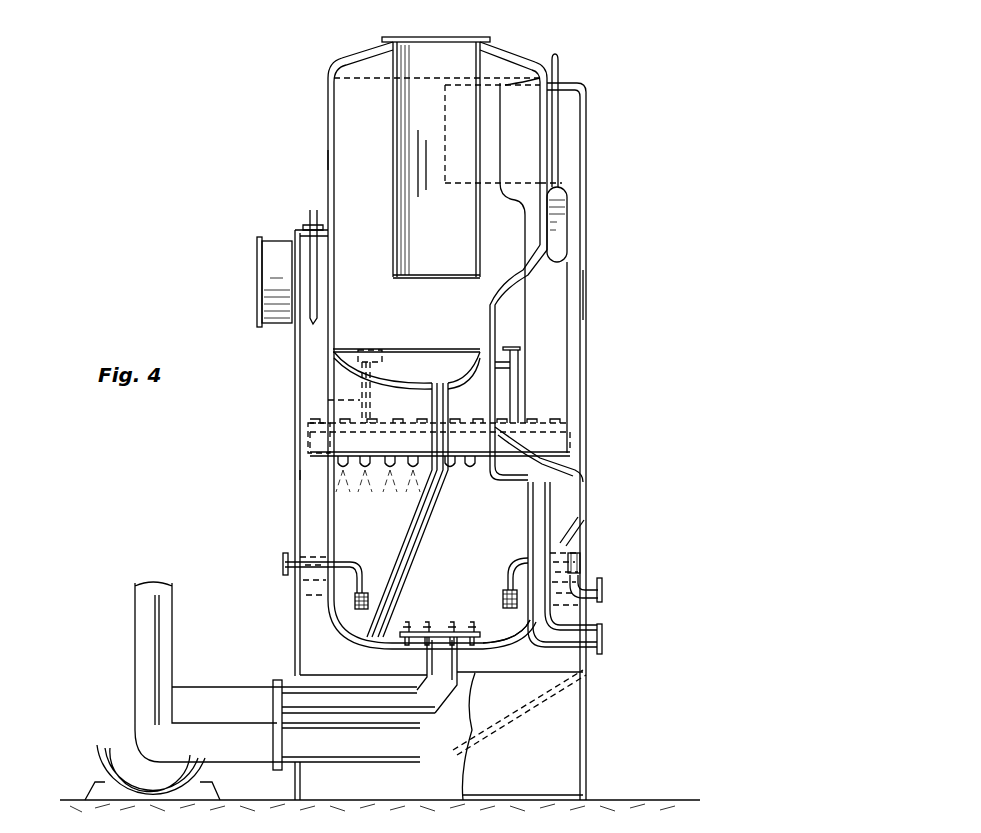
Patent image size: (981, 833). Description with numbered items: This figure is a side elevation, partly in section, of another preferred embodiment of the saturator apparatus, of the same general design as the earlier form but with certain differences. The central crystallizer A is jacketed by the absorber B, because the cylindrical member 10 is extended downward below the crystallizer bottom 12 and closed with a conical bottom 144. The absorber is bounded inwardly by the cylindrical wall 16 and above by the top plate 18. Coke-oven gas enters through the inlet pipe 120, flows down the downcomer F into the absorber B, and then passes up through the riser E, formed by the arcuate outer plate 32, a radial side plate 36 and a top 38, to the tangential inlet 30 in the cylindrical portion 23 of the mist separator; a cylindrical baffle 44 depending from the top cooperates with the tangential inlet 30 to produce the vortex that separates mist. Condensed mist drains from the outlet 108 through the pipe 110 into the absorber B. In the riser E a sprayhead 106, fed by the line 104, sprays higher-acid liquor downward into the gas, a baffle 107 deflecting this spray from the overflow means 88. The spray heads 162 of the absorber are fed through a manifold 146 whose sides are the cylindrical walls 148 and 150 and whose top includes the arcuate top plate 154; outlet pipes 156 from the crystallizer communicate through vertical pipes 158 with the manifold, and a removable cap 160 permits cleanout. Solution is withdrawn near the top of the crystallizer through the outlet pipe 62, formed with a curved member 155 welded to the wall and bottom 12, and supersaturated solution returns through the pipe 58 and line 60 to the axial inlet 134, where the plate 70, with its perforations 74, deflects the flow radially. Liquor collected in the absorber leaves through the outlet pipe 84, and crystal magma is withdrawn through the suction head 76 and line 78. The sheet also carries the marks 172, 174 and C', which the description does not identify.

The cylindrical member 10 is at (602, 594).
The bottom of the crystallizer 12 is at (500, 645).
The cylindrical wall 16 is at (295, 493).
The top plate 18 is at (560, 448).
The cylindrical portion 23 is at (335, 260).
The tangential inlet 30 is at (487, 97).
The arcuate outer plate 32 is at (583, 334).
The radial side plate 36 is at (553, 283).
The top of the riser 38 is at (418, 52).
The cylindrical baffle 44 is at (393, 183).
The pipe 58 is at (150, 620).
The line 60 is at (225, 690).
The outlet pipe 62 is at (600, 647).
The plate 70 is at (445, 632).
The perforations 74 is at (505, 635).
The suction head 76 is at (355, 602).
The line 78 is at (292, 570).
The outlet pipe 84 is at (242, 760).
The overflow means 88 is at (582, 563).
The line 104 is at (560, 66).
The sprayhead 106 is at (570, 200).
The baffle 107 is at (580, 523).
The outlet 108 is at (445, 378).
The pipe 110 is at (400, 545).
The inlet pipe 120 is at (265, 240).
The axial inlet 134 is at (445, 655).
The conical bottom 144 is at (512, 730).
The manifold 146 is at (565, 436).
The cylindrical wall 148 is at (560, 422).
The cylindrical wall 150 is at (330, 432).
The arcuate top plate 154 is at (340, 410).
The curved member 155 is at (552, 515).
The outlet pipes 156 is at (362, 350).
The vertical pipes 158 is at (368, 400).
The removable cap 160 is at (517, 347).
The spray heads 162 is at (352, 472).
The top plate 172 is at (572, 92).
The deflector 174 is at (505, 88).
The crystallizer A is at (330, 521).
The absorber B is at (297, 470).
The chamber C' is at (286, 156).
The riser E is at (583, 292).
The downcomer F is at (296, 359).